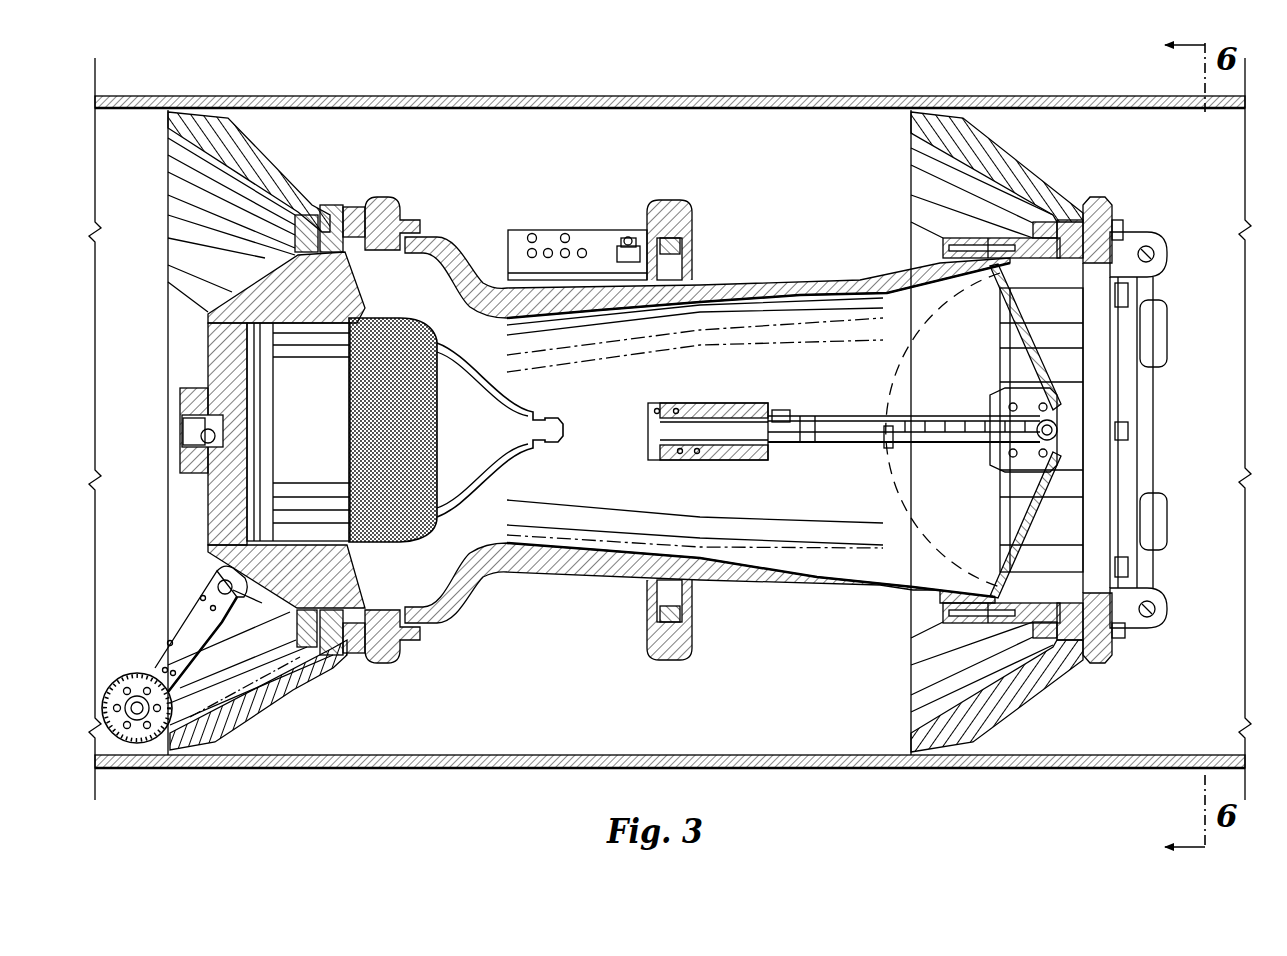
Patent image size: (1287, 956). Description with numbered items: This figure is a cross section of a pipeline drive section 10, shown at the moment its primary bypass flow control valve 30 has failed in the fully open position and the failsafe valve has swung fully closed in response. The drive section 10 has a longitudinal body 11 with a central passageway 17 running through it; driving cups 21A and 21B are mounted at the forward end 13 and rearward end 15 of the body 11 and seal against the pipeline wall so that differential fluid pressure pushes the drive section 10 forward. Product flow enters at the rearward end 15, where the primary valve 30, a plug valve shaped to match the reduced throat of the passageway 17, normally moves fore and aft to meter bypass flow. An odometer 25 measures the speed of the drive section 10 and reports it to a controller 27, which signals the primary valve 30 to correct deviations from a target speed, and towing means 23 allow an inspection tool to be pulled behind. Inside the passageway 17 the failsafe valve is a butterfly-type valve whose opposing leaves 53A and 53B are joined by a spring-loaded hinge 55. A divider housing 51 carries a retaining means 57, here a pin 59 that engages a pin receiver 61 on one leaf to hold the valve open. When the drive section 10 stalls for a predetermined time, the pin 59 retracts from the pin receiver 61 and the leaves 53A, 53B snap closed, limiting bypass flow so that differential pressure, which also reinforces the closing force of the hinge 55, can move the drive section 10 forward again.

The drive section 10 is at (720, 253).
The longitudinal body 11 is at (763, 284).
The forward end 13 is at (1097, 188).
The rearward end 15 is at (343, 183).
The central passageway 17 is at (703, 493).
The driving cup 21A is at (1010, 150).
The driving cup 21B is at (260, 717).
The towing means 23 is at (180, 428).
The odometer 25 is at (122, 675).
The controller 27 is at (587, 237).
The primary bypass flow control valve 30 is at (468, 392).
The divider housing 51 is at (720, 402).
The leaf 53A is at (1123, 307).
The leaf 53B is at (1123, 557).
The spring-loaded hinge 55 is at (1033, 452).
The retaining means 57 is at (828, 406).
The pin 59 is at (884, 445).
The pin receiver 61 is at (930, 253).